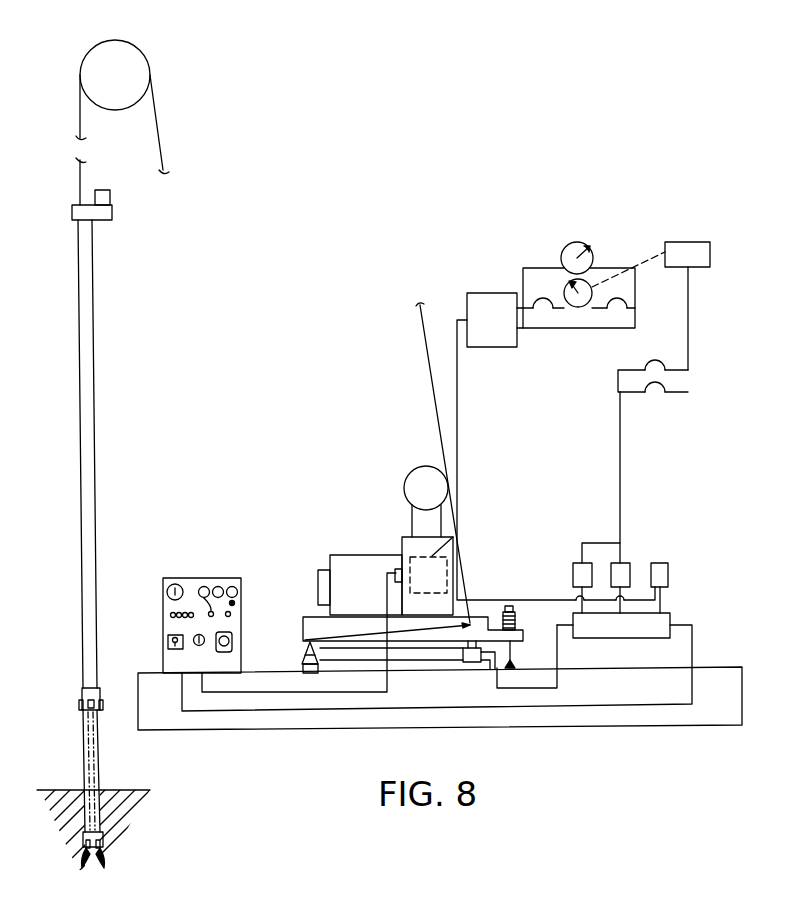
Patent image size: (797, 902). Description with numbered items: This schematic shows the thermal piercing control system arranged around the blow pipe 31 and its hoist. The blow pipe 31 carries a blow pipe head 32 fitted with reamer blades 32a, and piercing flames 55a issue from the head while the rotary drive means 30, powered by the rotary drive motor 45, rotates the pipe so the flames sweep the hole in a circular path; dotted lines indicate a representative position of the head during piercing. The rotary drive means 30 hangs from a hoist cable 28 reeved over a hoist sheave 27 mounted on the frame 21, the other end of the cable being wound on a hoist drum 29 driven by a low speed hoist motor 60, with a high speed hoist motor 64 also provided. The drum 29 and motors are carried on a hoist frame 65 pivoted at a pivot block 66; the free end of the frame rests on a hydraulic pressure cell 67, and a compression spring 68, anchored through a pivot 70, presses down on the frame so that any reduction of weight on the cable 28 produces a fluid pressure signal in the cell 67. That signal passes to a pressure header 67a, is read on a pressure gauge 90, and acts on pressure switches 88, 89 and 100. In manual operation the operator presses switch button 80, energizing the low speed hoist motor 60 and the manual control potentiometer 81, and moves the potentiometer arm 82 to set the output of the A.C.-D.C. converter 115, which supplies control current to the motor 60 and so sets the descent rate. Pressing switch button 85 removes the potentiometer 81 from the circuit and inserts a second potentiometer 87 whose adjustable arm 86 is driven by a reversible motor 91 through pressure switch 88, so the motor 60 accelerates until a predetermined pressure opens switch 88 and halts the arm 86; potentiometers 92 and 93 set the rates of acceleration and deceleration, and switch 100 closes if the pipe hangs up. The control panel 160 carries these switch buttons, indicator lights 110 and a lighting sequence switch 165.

The hoist sheave 27 is at (150, 52).
The hoist cable 28 is at (80, 115).
The rotary drive motor 45 is at (105, 190).
The rotary drive means 30 is at (112, 212).
The blow pipe 31 is at (95, 432).
The blow pipe head 32 is at (82, 700).
The reamer blades 32a is at (104, 706).
The piercing flames 55a is at (100, 864).
The pressure gauge 90 is at (172, 584).
The indicator lights 110 is at (204, 586).
The control panel 160 is at (238, 574).
The potentiometer arm 82 is at (194, 638).
The lighting sequence switch 165 is at (168, 640).
The switch button 85 is at (231, 612).
The switch button 80 is at (222, 650).
The frame 21 is at (280, 670).
The high speed hoist motor 64 is at (330, 558).
The low speed hoist motor 60 is at (453, 566).
The hoist drum 29 is at (422, 466).
The hoist frame 65 is at (303, 626).
The pivot block 66 is at (318, 666).
The hydraulic pressure cell 67 is at (470, 662).
The compression spring 68 is at (515, 618).
The pivot 70 is at (514, 664).
The pressure switch 88 is at (573, 566).
The pressure switch 89 is at (630, 566).
The pressure switch 100 is at (668, 570).
The pressure header 67a is at (670, 616).
The A.C.-D.C. converter 115 is at (480, 293).
The manual control potentiometer 81 is at (582, 245).
The second potentiometer 87 is at (570, 282).
The adjustable arm 86 is at (570, 305).
The reversible motor 91 is at (710, 248).
The potentiometer 92 is at (655, 360).
The potentiometer 93 is at (668, 396).